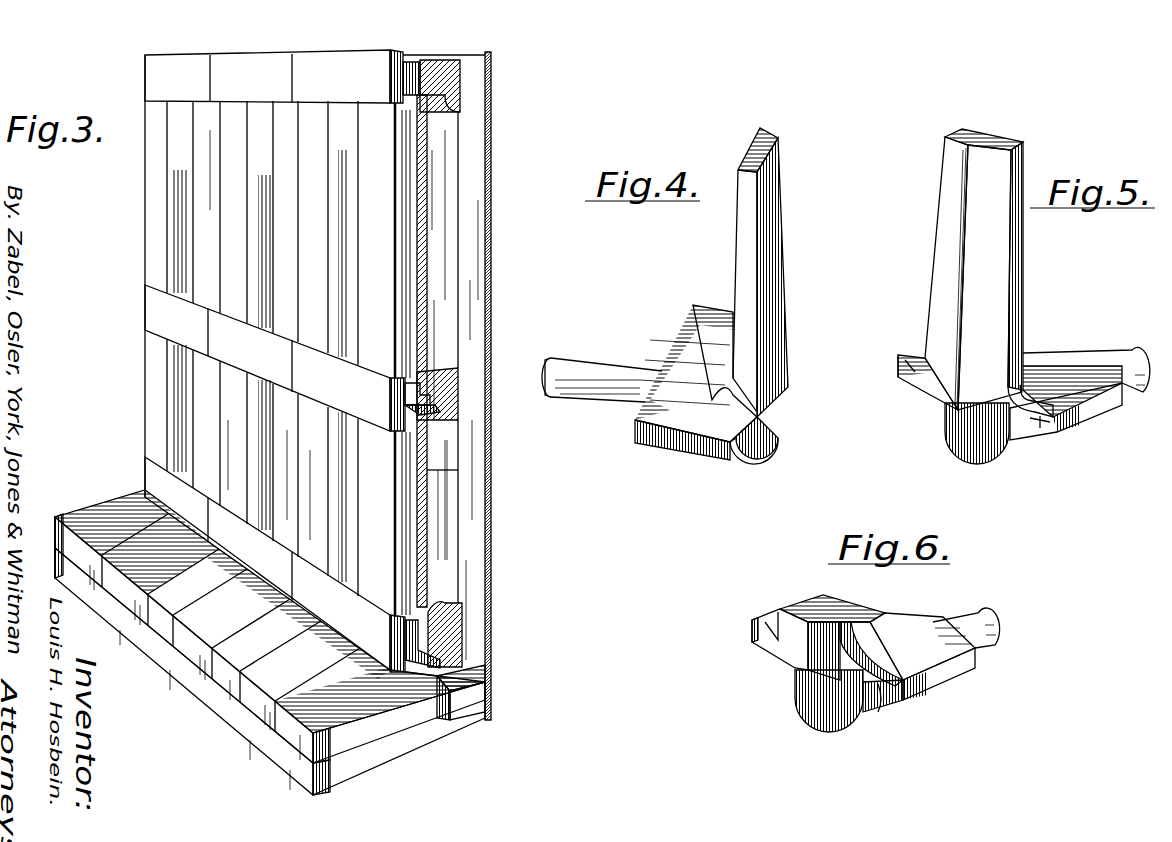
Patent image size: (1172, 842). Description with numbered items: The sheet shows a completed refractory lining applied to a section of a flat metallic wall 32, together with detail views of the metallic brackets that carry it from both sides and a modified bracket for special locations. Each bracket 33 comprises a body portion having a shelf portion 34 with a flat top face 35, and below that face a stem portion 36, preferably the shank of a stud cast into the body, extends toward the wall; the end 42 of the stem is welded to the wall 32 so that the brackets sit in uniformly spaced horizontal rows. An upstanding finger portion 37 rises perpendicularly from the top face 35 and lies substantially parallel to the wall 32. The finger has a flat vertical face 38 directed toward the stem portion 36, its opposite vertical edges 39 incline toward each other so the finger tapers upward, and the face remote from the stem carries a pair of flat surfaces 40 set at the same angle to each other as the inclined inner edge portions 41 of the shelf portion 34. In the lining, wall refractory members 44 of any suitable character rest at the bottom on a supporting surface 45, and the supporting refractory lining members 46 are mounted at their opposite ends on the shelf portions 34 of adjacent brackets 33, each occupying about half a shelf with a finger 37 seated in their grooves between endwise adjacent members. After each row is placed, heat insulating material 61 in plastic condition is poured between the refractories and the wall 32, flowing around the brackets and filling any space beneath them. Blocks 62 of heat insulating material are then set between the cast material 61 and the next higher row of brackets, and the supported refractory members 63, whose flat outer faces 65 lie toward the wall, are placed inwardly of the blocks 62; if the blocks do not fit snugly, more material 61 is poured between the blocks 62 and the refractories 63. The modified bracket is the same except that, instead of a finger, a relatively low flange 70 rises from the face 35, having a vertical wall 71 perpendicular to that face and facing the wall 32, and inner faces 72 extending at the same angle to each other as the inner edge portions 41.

In FIG. 3, the flat metallic wall section 32 is at (492, 312).
In FIG. 3, the metallic bracket 33 is at (447, 116).
In FIG. 4, the metallic bracket 33 is at (770, 438).
In FIG. 5, the metallic bracket 33 is at (960, 420).
In FIG. 6, the metallic bracket 33 is at (808, 694).
In FIG. 4, the shelf portion 34 is at (676, 440).
In FIG. 5, the shelf portion 34 is at (1102, 408).
In FIG. 6, the shelf portion 34 is at (951, 674).
In FIG. 4, the flat top face 35 is at (690, 330).
In FIG. 5, the flat top face 35 is at (1048, 365).
In FIG. 6, the flat top face 35 is at (905, 632).
In FIG. 4, the stem portion 36 is at (602, 398).
In FIG. 5, the stem portion 36 is at (1116, 358).
In FIG. 6, the stem portion 36 is at (974, 615).
In FIG. 3, the upstanding finger portion 37 is at (422, 372).
In FIG. 4, the upstanding finger portion 37 is at (740, 158).
In FIG. 5, the upstanding finger portion 37 is at (997, 133).
In FIG. 4, the flat vertical face 38 is at (735, 272).
In FIG. 4, the vertical edges 39 is at (745, 222).
In FIG. 5, the vertical edges 39 is at (942, 199).
In FIG. 5, the flat surfaces 40 is at (995, 180).
In FIG. 5, the inclined inner edge portions 41 is at (900, 365).
In FIG. 6, the inclined inner edge portions 41 is at (770, 640).
In FIG. 4, the end of stem portion 42 is at (540, 375).
In FIG. 3, the wall refractory members 44 is at (252, 692).
In FIG. 3, the supporting surface 45 is at (438, 733).
In FIG. 3, the supporting refractory lining members 46 is at (155, 73).
In FIG. 3, the heat insulating material 61 is at (455, 85).
In FIG. 3, the heat insulating blocks 62 is at (452, 492).
In FIG. 3, the supported refractory members 63 is at (180, 208).
In FIG. 3, the flat outer faces 65 is at (427, 477).
In FIG. 6, the low flange 70 is at (813, 607).
In FIG. 6, the vertical wall 71 is at (882, 626).
In FIG. 6, the inner faces 72 is at (778, 610).